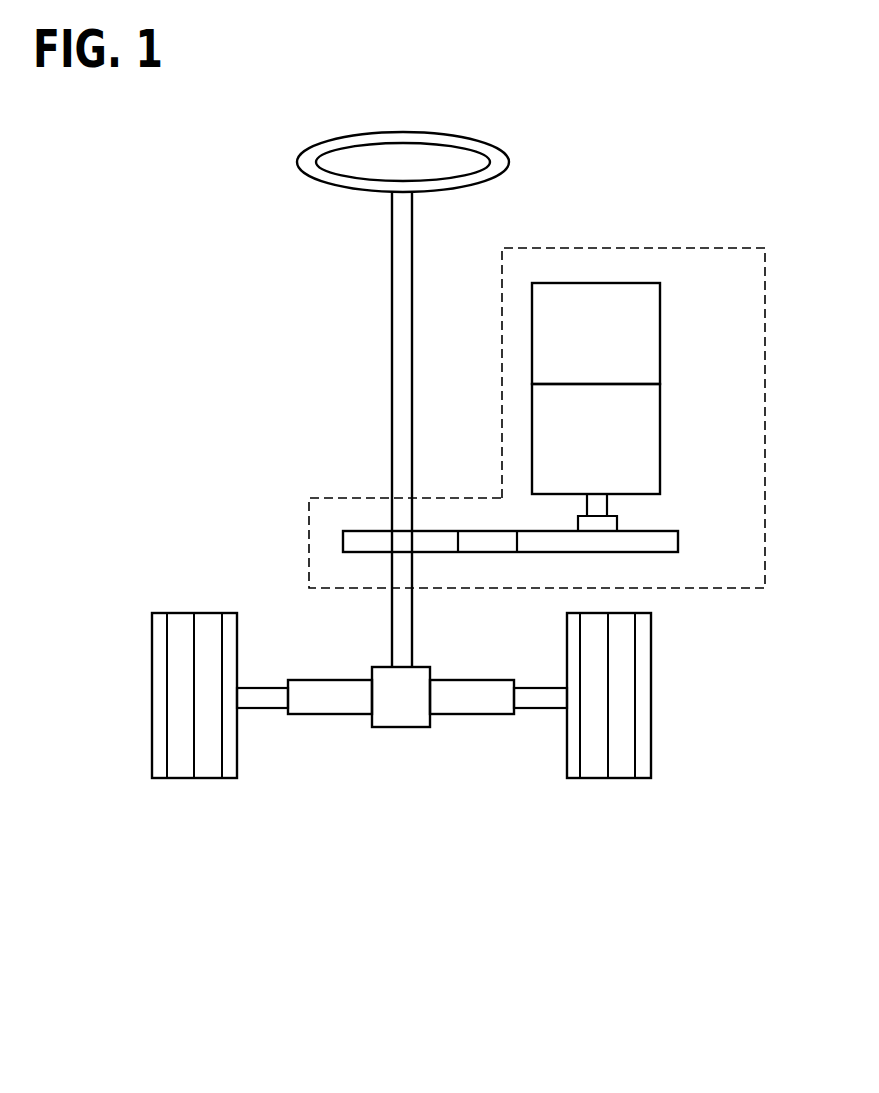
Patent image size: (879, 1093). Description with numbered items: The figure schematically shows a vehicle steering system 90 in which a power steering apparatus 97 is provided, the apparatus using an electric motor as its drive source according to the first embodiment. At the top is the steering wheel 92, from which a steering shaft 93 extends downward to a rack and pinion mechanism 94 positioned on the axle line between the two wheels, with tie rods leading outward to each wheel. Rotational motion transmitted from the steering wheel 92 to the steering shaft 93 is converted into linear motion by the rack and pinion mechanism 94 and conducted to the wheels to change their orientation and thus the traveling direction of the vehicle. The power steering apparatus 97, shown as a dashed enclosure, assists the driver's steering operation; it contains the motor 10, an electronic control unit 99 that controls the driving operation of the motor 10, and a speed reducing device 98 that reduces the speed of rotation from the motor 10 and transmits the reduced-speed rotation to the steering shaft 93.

The steering system 90 is at (363, 853).
The steering wheel 92 is at (297, 165).
The steering shaft 93 is at (392, 334).
The rack and pinion mechanism 94 is at (403, 727).
The power steering apparatus 97 is at (737, 248).
The speed reducing device 98 is at (678, 538).
The electronic control unit (ECU) 99 is at (660, 332).
The electric motor 10 is at (660, 431).